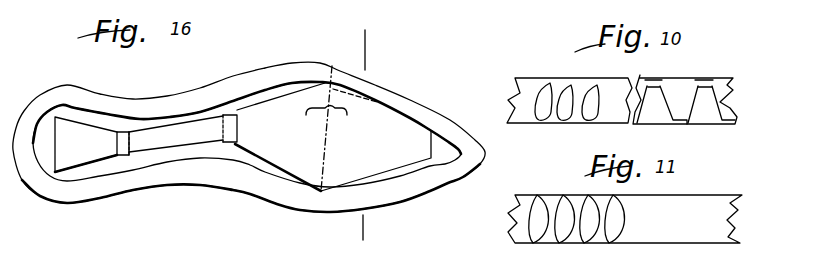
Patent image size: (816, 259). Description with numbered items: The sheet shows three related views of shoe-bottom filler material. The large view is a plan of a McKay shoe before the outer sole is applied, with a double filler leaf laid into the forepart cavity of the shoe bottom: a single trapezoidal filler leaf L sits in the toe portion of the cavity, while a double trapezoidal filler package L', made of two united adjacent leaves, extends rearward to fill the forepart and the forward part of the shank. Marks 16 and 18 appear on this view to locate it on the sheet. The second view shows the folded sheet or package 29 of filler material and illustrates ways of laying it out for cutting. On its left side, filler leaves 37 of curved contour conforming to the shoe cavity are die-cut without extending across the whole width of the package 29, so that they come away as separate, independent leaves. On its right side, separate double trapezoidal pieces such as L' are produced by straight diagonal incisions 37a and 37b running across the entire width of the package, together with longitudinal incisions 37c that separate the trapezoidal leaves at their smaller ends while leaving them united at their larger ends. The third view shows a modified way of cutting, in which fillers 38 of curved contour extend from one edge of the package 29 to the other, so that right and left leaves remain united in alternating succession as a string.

In FIG. 16, the filler leaf L is at (86, 114).
In FIG. 16, the double trapezoidal filler package L' is at (333, 113).
In FIG. 16, the section line 16 is at (377, 50).
In FIG. 16, the section line 18 is at (375, 229).
In FIG. 10, the folded sheet or package 29 is at (642, 80).
In FIG. 11, the folded sheet or package 29 is at (705, 203).
In FIG. 10, the filler leaves 37 is at (564, 84).
In FIG. 10, the diagonal incision 37a is at (690, 97).
In FIG. 10, the diagonal incision 37b is at (717, 96).
In FIG. 10, the longitudinal incision 37c is at (702, 100).
In FIG. 11, the fillers 38 is at (538, 210).